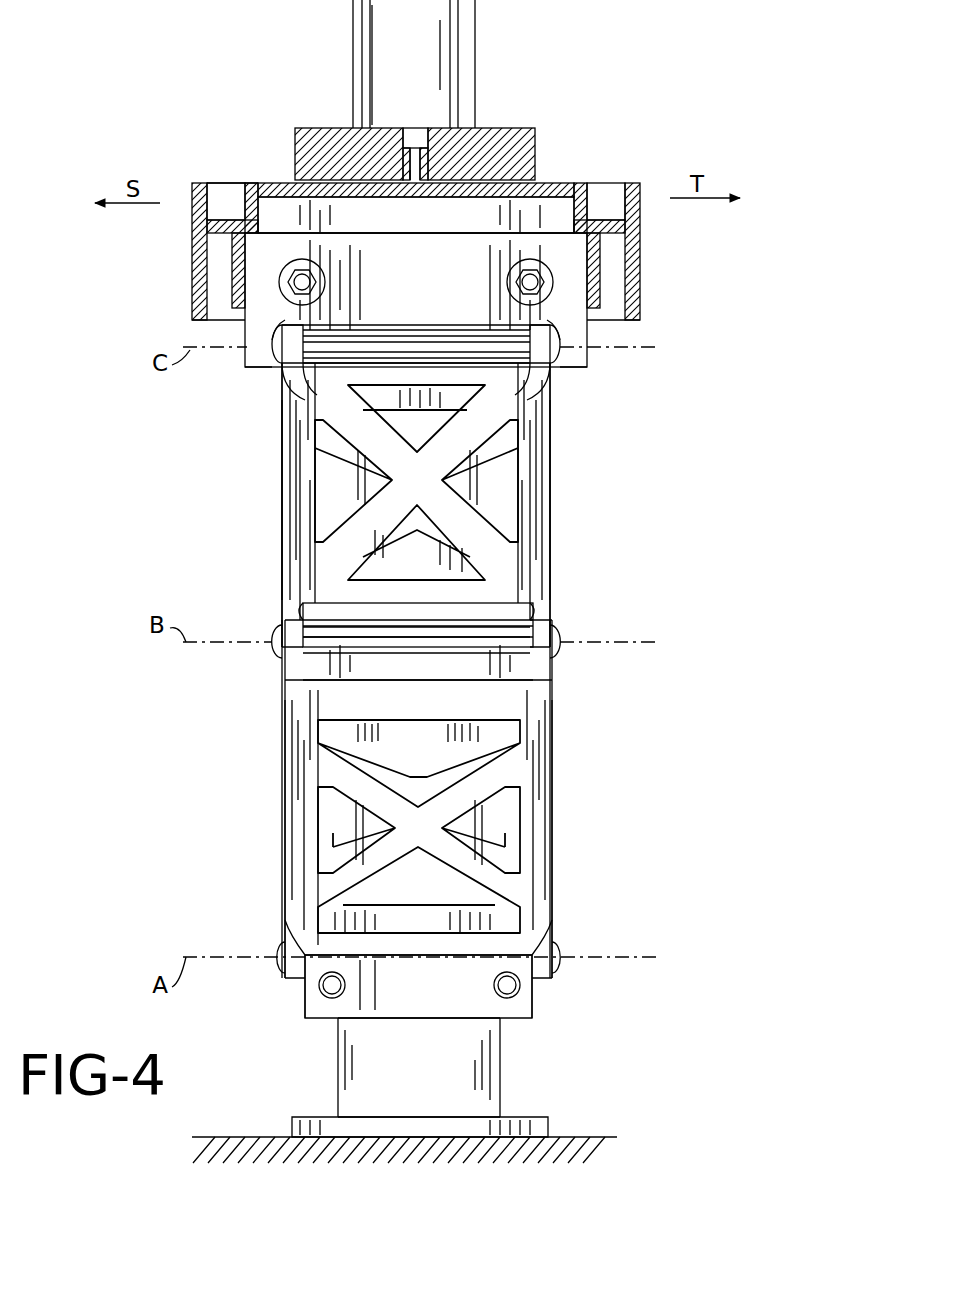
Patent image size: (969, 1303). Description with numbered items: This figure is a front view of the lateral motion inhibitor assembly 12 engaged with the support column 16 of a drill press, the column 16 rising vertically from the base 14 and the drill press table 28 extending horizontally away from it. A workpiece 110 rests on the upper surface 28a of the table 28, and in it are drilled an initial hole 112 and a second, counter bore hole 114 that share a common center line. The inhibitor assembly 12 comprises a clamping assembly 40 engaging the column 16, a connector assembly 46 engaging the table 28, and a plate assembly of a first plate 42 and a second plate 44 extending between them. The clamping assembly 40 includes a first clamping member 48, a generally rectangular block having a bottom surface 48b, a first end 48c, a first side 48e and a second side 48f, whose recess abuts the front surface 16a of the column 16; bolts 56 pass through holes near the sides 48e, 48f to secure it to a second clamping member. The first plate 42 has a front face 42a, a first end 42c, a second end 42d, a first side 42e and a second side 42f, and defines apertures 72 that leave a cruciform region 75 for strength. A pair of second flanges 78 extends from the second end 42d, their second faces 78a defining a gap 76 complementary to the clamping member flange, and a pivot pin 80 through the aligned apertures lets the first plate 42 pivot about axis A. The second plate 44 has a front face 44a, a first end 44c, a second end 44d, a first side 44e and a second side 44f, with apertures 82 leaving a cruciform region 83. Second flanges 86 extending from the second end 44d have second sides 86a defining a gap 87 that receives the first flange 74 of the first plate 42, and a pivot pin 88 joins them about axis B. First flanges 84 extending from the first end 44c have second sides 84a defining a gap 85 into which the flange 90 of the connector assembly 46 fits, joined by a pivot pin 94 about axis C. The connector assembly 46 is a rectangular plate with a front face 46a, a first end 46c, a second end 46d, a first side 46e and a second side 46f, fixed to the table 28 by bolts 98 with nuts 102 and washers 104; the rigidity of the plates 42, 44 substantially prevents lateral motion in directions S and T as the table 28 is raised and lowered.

The lateral motion inhibitor assembly 12 is at (675, 518).
The base 14 is at (585, 1132).
The support column 16 is at (350, 30).
The front surface of column 16a is at (390, 63).
The drill press table 28 is at (572, 178).
The upper surface of table 28a is at (258, 186).
The clamping assembly 40 is at (310, 1030).
The first plate 42 is at (562, 760).
The front face of first plate 42a is at (305, 846).
The first end of first plate 42c is at (553, 668).
The second end of first plate 42d is at (417, 958).
The first side of first plate 42e is at (285, 766).
The second side of first plate 42f is at (552, 795).
The second plate 44 is at (560, 465).
The front face of second plate 44a is at (305, 502).
The first end of second plate 44c is at (356, 332).
The second end of second plate 44d is at (545, 600).
The first side of second plate 44e is at (284, 522).
The second side of second plate 44f is at (552, 490).
The connector assembly 46 is at (352, 222).
The front face of connector plate 46a is at (393, 271).
The first end of connector plate 46c is at (360, 173).
The second end of connector plate 46d is at (565, 355).
The first side of connector plate 46e is at (290, 275).
The second side of connector plate 46f is at (545, 275).
The first clamping member 48 is at (520, 1025).
The bottom surface of first clamping member 48b is at (457, 1020).
The first end of first clamping member 48c is at (392, 1018).
The first side of first clamping member 48e is at (303, 1008).
The second side of first clamping member 48f is at (535, 1010).
The bolt 56 is at (320, 985).
The apertures 72 is at (345, 732).
The first flange 74 is at (350, 625).
The cruciform region 75 is at (403, 838).
The gap 76 is at (352, 1010).
The second flanges 78 is at (287, 952).
The second face of second flange 78a is at (300, 940).
The pivot pin 80 is at (277, 957).
The apertures 82 is at (345, 405).
The cruciform region 83 is at (402, 491).
The first flanges 84 is at (300, 372).
The second side of first flange 84a is at (306, 405).
The gap 85 is at (455, 342).
The second flanges 86 is at (285, 640).
The second side of second flange 86a is at (300, 603).
The gap 87 is at (410, 628).
The pivot pin 88 is at (277, 652).
The flange 90 is at (408, 336).
The pivot pin 94 is at (282, 348).
The bolt 98 is at (283, 325).
The nut 102 is at (302, 282).
The washer 104 is at (300, 262).
The workpiece 110 is at (318, 126).
The initial hole 112 is at (417, 180).
The second hole 114 is at (418, 133).